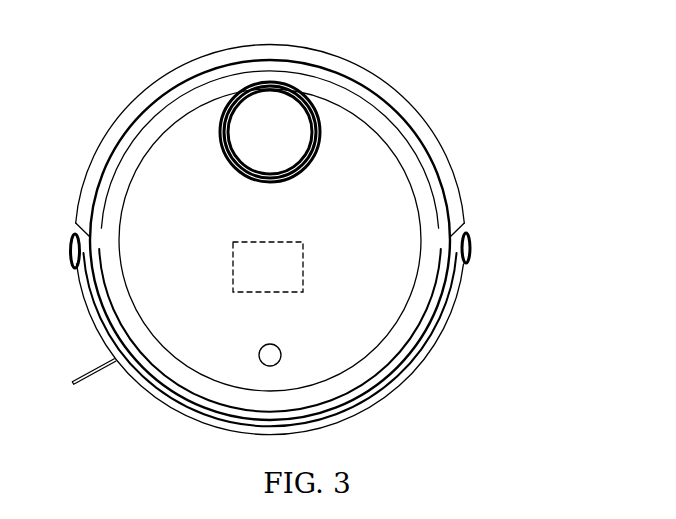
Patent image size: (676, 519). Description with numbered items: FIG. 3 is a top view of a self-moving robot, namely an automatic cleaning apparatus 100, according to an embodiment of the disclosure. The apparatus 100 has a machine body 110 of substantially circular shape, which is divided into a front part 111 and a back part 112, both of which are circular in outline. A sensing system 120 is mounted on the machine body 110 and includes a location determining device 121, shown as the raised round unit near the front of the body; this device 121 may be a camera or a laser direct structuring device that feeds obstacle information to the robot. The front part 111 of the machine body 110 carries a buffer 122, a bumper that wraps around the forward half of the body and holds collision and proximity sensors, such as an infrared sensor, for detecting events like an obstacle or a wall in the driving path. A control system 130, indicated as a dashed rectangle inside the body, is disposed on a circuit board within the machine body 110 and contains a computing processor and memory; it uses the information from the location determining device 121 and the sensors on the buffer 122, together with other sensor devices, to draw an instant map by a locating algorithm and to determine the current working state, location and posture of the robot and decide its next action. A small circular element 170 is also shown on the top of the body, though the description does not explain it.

The automatic cleaning apparatus 100 is at (437, 60).
The machine body 110 is at (397, 155).
The front part 111 is at (420, 343).
The back part 112 is at (392, 108).
The sensing system 120 is at (533, 215).
The location determining device 121 is at (315, 158).
The buffer 122 is at (467, 278).
The control system 130 is at (300, 292).
The button 170 is at (259, 357).